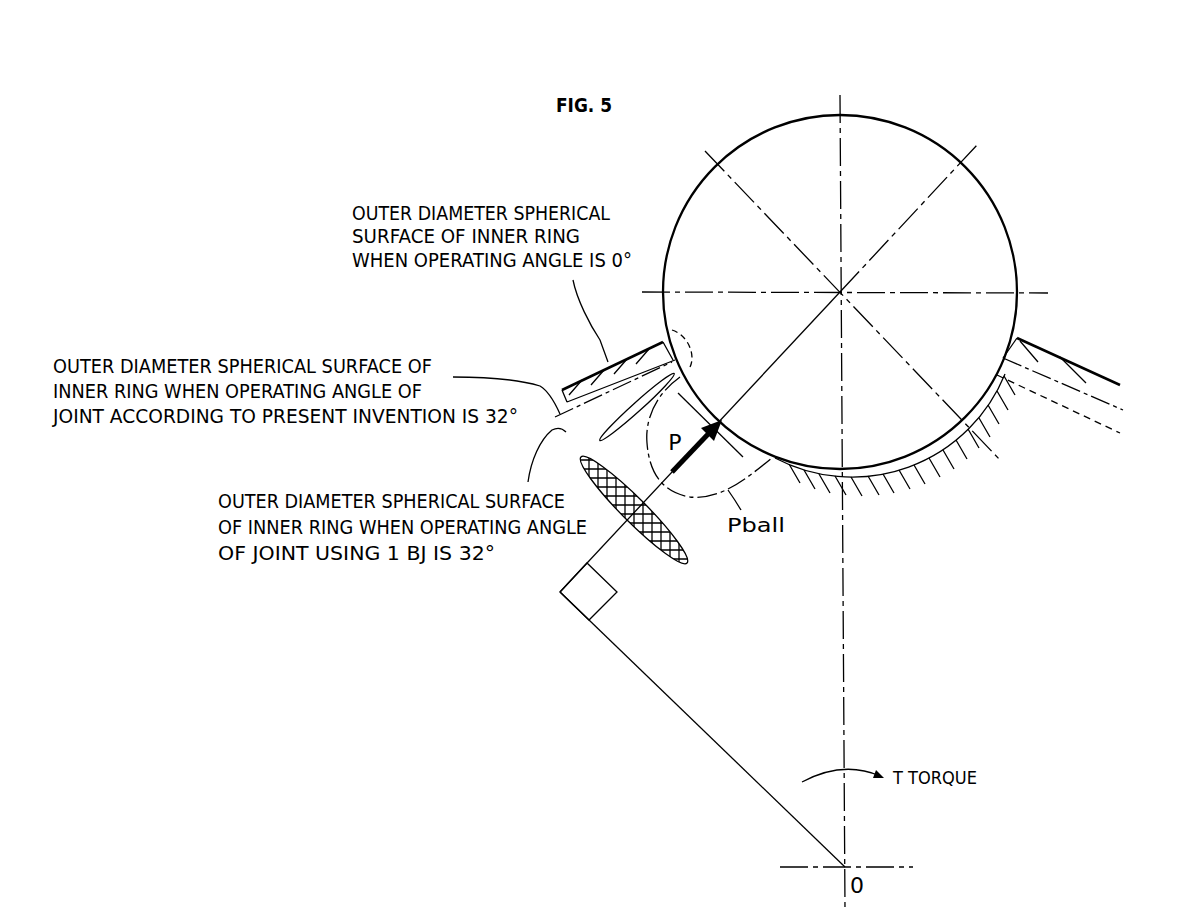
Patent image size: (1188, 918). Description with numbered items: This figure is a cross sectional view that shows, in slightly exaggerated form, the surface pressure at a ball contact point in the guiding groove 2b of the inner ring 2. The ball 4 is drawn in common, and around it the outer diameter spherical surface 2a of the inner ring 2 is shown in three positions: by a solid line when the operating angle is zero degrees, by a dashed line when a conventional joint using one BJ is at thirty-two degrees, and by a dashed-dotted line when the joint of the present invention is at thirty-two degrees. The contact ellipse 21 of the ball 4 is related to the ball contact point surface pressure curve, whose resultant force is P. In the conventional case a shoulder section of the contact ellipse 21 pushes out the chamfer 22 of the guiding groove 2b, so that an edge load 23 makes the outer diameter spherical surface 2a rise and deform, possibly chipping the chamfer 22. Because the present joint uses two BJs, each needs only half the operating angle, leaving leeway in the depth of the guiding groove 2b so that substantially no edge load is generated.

The inner ring 2 is at (1078, 347).
The outer diameter spherical surface 2a is at (1100, 374).
The guiding groove 2b is at (856, 468).
The ball 4 is at (983, 190).
The contact ellipse 21 is at (658, 550).
The chamfer 22 is at (668, 338).
The edge load 23 is at (623, 436).